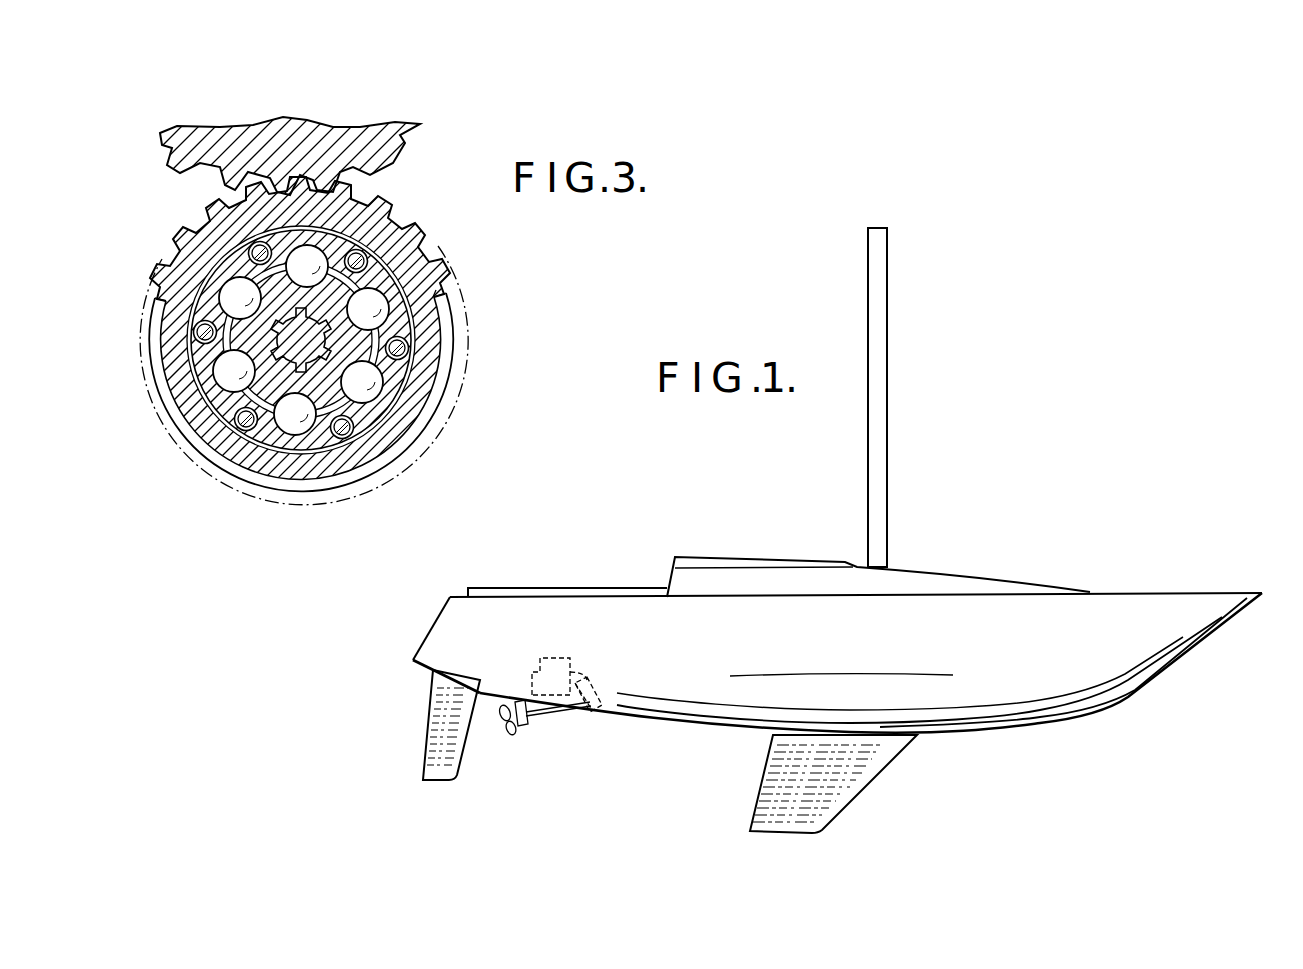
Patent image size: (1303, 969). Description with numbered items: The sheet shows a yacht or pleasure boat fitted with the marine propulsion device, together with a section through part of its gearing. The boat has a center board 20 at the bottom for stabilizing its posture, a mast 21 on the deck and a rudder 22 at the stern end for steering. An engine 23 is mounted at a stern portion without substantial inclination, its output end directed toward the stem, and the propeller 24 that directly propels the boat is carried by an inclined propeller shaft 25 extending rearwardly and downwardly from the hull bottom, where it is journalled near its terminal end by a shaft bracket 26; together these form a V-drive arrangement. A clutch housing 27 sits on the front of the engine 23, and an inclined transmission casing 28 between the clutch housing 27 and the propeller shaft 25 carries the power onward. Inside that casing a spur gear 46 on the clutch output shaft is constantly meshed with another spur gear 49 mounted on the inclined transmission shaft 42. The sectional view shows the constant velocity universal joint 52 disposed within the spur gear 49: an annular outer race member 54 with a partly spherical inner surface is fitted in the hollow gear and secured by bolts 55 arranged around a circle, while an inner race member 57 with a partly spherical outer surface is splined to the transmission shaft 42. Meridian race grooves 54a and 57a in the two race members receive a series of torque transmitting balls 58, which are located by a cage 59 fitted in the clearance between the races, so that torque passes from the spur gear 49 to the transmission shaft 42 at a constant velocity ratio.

In FIG. 1, the center board 20 is at (767, 790).
In FIG. 1, the mast 21 is at (887, 328).
In FIG. 1, the rudder 22 is at (443, 773).
In FIG. 1, the engine 23 is at (543, 657).
In FIG. 1, the propeller 24 is at (507, 733).
In FIG. 1, the propeller shaft 25 is at (543, 717).
In FIG. 1, the shaft bracket 26 is at (505, 698).
In FIG. 1, the clutch housing 27 is at (583, 677).
In FIG. 1, the transmission casing 28 is at (592, 710).
In FIG. 3, the transmission shaft 42 is at (327, 372).
In FIG. 3, the spur gear 46 is at (368, 148).
In FIG. 3, the spur gear 49 is at (418, 236).
In FIG. 3, the constant velocity universal joint 52 is at (372, 400).
In FIG. 3, the outer race member 54 is at (418, 344).
In FIG. 3, the race grooves 54a is at (347, 212).
In FIG. 3, the bolts 55 is at (175, 303).
In FIG. 3, the inner race member 57 is at (246, 425).
In FIG. 3, the race grooves 57a is at (223, 378).
In FIG. 3, the torque transmitting balls 58 is at (385, 312).
In FIG. 3, the cage 59 is at (404, 279).